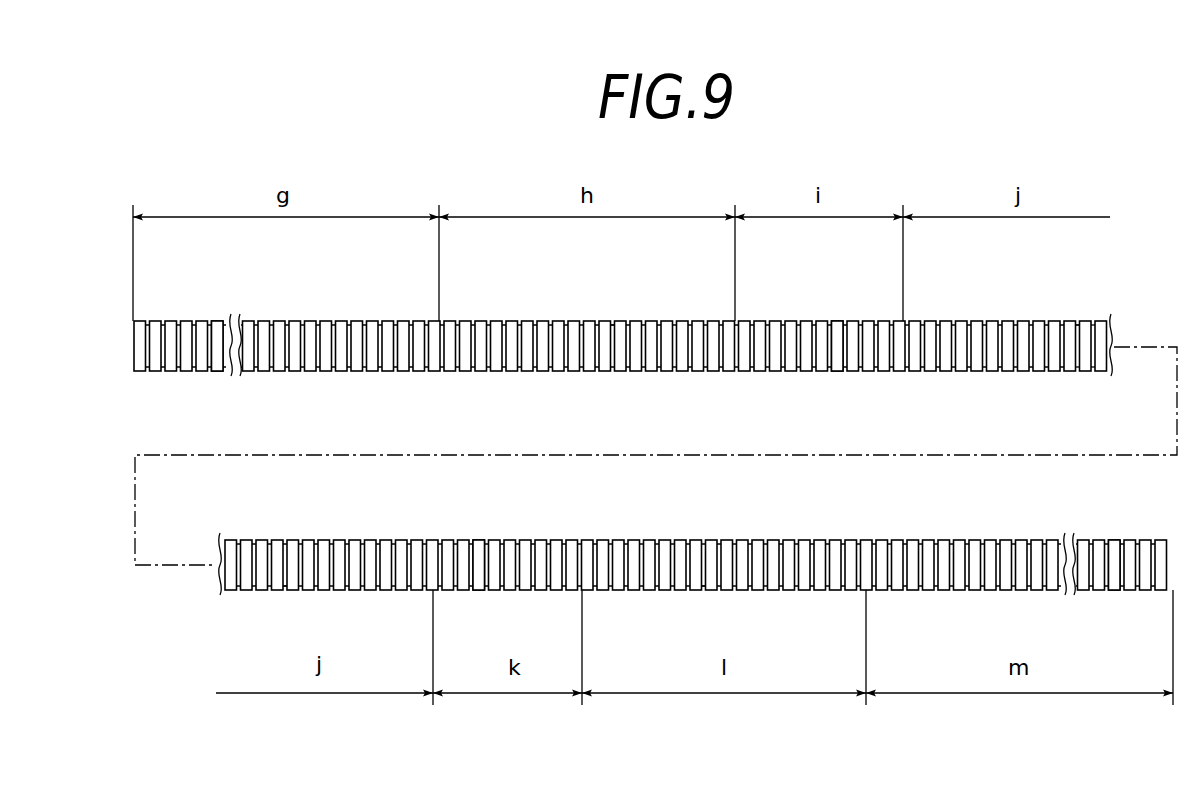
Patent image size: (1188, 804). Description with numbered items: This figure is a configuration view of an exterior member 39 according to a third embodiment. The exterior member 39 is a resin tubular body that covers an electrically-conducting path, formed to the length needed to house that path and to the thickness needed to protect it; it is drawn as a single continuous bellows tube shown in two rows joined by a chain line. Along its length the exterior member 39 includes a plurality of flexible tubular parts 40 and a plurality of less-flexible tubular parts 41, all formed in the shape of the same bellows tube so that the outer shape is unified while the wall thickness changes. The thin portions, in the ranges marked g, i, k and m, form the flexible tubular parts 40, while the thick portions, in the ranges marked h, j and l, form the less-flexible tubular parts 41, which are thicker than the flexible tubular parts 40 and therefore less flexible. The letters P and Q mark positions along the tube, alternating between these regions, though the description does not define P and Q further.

The exterior member 39 is at (1123, 258).
The flexible tubular part 40 is at (219, 320).
The less-flexible tubular part 41 is at (604, 321).
The pitch region P is at (274, 383).
The pitch region Q is at (506, 383).